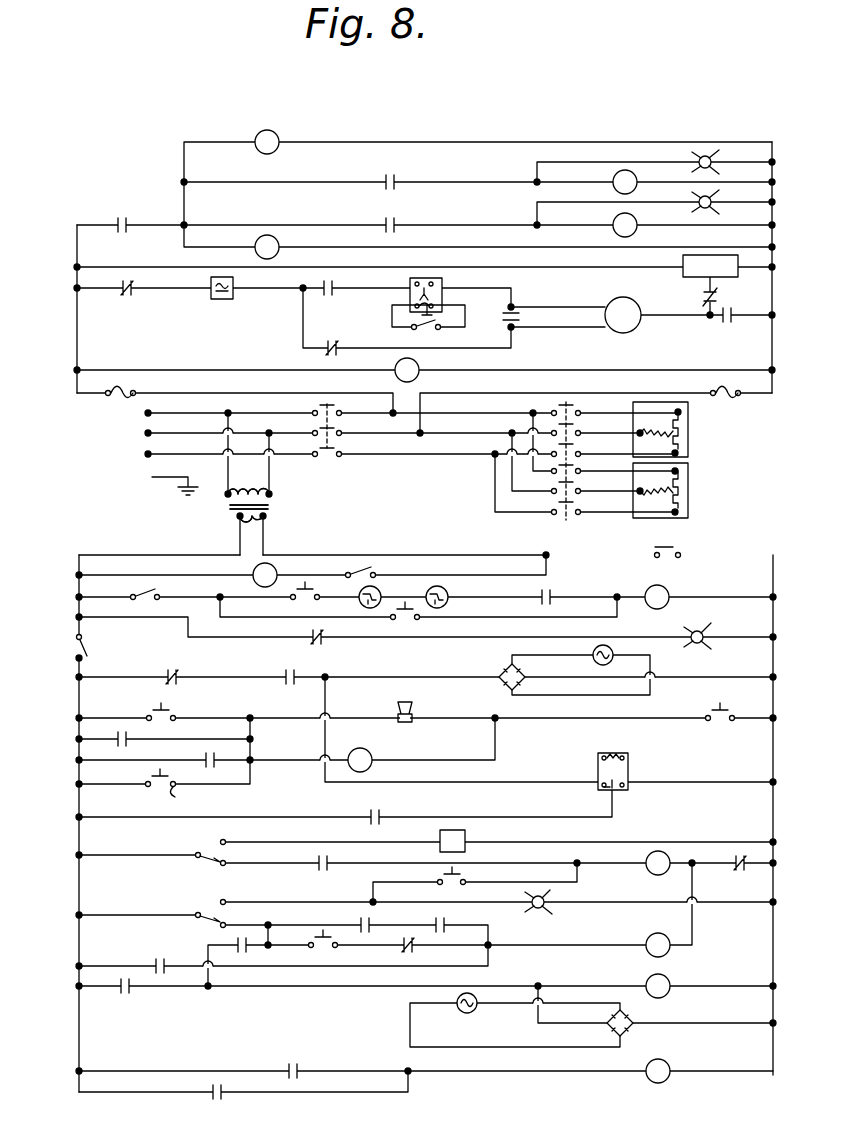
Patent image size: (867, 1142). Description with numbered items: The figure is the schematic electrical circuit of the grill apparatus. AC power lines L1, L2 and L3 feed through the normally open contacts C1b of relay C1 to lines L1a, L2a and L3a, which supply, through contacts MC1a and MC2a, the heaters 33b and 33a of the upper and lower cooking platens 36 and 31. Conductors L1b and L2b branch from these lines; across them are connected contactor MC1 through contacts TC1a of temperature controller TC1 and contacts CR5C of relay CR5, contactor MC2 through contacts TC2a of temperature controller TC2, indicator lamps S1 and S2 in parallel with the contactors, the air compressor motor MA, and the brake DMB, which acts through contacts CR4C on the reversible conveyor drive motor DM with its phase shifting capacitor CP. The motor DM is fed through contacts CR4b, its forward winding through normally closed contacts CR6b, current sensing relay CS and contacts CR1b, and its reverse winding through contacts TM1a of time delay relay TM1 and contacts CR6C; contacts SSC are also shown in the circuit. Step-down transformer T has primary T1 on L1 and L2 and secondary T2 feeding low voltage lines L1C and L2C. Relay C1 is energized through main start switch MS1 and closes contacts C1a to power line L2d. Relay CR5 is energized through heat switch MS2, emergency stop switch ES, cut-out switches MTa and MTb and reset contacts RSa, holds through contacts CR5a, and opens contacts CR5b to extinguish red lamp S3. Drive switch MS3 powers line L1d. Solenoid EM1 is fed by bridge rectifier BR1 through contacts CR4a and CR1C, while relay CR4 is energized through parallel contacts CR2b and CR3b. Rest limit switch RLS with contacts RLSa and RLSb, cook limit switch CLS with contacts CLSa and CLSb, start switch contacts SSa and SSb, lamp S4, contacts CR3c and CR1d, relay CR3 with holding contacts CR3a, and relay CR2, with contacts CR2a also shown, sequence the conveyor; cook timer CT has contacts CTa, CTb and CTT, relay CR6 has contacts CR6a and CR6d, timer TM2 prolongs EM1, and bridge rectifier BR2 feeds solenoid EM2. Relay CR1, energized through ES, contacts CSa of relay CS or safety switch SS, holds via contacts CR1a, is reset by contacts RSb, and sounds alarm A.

The conductor L1b is at (77, 352).
The conductor L2b is at (772, 338).
The low voltage line L1C is at (108, 548).
The low voltage line L2C is at (380, 553).
The line L1d is at (79, 700).
The line L2d is at (773, 582).
The AC power line L1 is at (148, 413).
The AC power line L2 is at (148, 433).
The AC power line L3 is at (148, 454).
The line L1a is at (440, 413).
The line L2a is at (436, 433).
The line L3a is at (432, 454).
The temperature controller TC1 is at (270, 112).
The normally open contacts of temperature controller TC1 TC1a is at (384, 178).
The normally open contacts of relay CR5 CR5C is at (128, 220).
The normally open contacts of temperature controller TC2 TC2a is at (396, 222).
The temperature controller TC2 is at (279, 245).
The contactor MC1 is at (637, 180).
The contactor MC2 is at (637, 223).
The indicator lamp S1 is at (712, 156).
The indicator lamp S2 is at (712, 196).
The normally closed contacts of relay CR1 CR1b is at (131, 292).
The current sensing relay CS is at (224, 299).
The normally open contacts of relay CR6 CR6C is at (334, 286).
The normally closed contacts of relay CR6 CR6b is at (328, 340).
The time delay relay TM1 is at (442, 280).
The normally open contacts of time delay relay TM1 TM1a is at (440, 294).
The selector switch contact SSC is at (440, 329).
The phase shifting capacitor CP is at (516, 308).
The conveyor drive motor DM is at (616, 330).
The brake DMB is at (683, 268).
The normally closed contacts of relay CR4 CR4C is at (716, 295).
The normally open contacts of relay CR4 CR4b is at (733, 320).
The motor for air compressor MA is at (419, 368).
The normally open contacts of relay C1 C1b is at (300, 404).
The transformer primary T1 is at (258, 494).
The step-down transformer T is at (270, 508).
The transformer secondary T2 is at (252, 520).
The relay contacts of contactor MC1 MC1a is at (566, 400).
The relay contacts of contactor MC2 MC2a is at (560, 516).
The electrical heater 33b is at (683, 420).
The upper cooking platen 36 is at (688, 447).
The electrical heater 33a is at (683, 490).
The lower cooking platen 31 is at (688, 514).
The relay contacts of relay C1 C1a is at (668, 547).
The control relay C1 is at (277, 573).
The main start switch MS1 is at (368, 566).
The heat switch MS2 is at (150, 590).
The emergency stop switch ES is at (290, 596).
The platen high temperature cut-out switch MTa is at (362, 588).
The platen high temperature cut-out switch MTb is at (446, 590).
The normally open contacts of relay CR5 CR5a is at (552, 594).
The control relay CR5 is at (665, 588).
The normally open contacts of reset switch RSa is at (418, 620).
The normally closed contacts of relay CR5 CR5b is at (323, 634).
The red indicator lamp S3 is at (710, 623).
The drive switch MS3 is at (84, 644).
The normally closed contacts of relay CR1 CR1C is at (178, 674).
The normally open contacts of relay CR4 CR4a is at (296, 674).
The full wave bridge rectifier BR1 is at (500, 668).
The solenoid EM1 is at (612, 650).
The audible alarm A is at (412, 710).
The normally open contacts of current sensing relay CS CSa is at (128, 736).
The normally open contacts of relay CR1 CR1a is at (204, 756).
The relay CR1 is at (368, 752).
The safety switch SS is at (176, 788).
The normally closed contacts of reset switch RSb is at (720, 722).
The timer TM2 is at (628, 753).
The normally open contacts of relay CR6 CR6d is at (381, 814).
The contact of cook limit switch CLS CLSb is at (226, 838).
The cook timer CT is at (465, 834).
The cook limit switch CLS is at (196, 860).
The contact of cook limit switch CLS CLSa is at (225, 866).
The normally open contacts of relay CR3 CR3a is at (329, 860).
The relay CR3 is at (647, 856).
The normally closed contacts of relay CR1 CR1d is at (734, 858).
The normally open contacts of start switch SSa is at (462, 876).
The contact of rest limit switch RLS RLSb is at (226, 900).
The rest limit switch RLS is at (196, 920).
The contact of rest limit switch RLS RLSa is at (226, 922).
The relay contact CR2a is at (371, 922).
The normally closed contacts of cook timer CT CTa is at (446, 922).
The indicator lamp S4 is at (556, 908).
The relay CR2 is at (652, 934).
The normally open contacts of relay CR6 CR6a is at (246, 950).
The normally open contacts of start switch SSb is at (326, 949).
The normally closed contacts of relay CR3 CR3c is at (412, 950).
The normally open contacts of cook timer CT CTT is at (154, 962).
The normally open contacts of cook timer CT CTb is at (131, 990).
The relay CR6 is at (666, 978).
The solenoid EM2 is at (470, 1013).
The full wave bridge rectifier BR2 is at (632, 1015).
The normally open contacts of relay CR2 CR2b is at (299, 1068).
The relay CR4 is at (666, 1063).
The normally open contacts of relay CR3 CR3b is at (223, 1094).